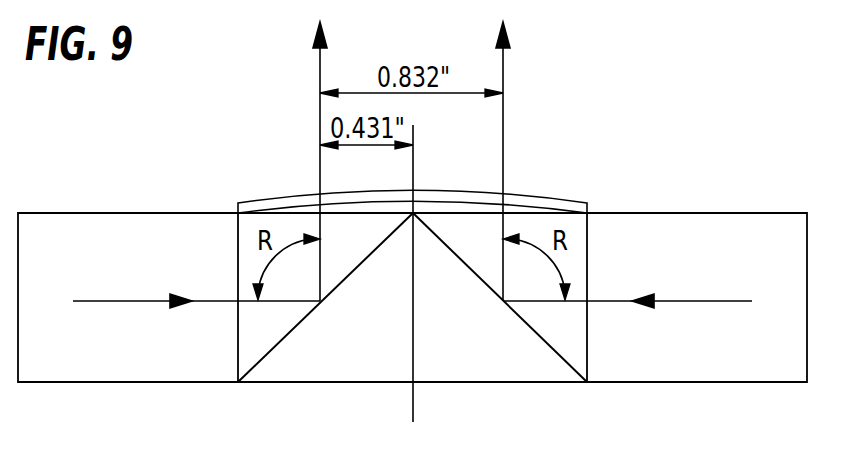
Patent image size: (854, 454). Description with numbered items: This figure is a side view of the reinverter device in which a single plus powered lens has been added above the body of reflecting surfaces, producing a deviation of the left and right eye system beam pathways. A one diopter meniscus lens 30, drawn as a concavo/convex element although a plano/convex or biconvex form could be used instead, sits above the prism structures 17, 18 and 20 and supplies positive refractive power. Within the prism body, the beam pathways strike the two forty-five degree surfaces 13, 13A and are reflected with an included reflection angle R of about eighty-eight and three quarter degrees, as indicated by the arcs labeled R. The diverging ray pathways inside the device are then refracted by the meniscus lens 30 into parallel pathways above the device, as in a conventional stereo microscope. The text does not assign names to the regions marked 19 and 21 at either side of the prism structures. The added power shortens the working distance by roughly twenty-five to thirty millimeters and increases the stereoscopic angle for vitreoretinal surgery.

The reflecting surface 13 is at (287, 333).
The reflecting surface 13A is at (531, 331).
The prism structure 17 is at (445, 325).
The prism structure 18 is at (273, 341).
The left light guide section 19 is at (126, 261).
The prism structure 20 is at (576, 340).
The right light guide section 21 is at (709, 372).
The meniscus lens 30 is at (567, 194).